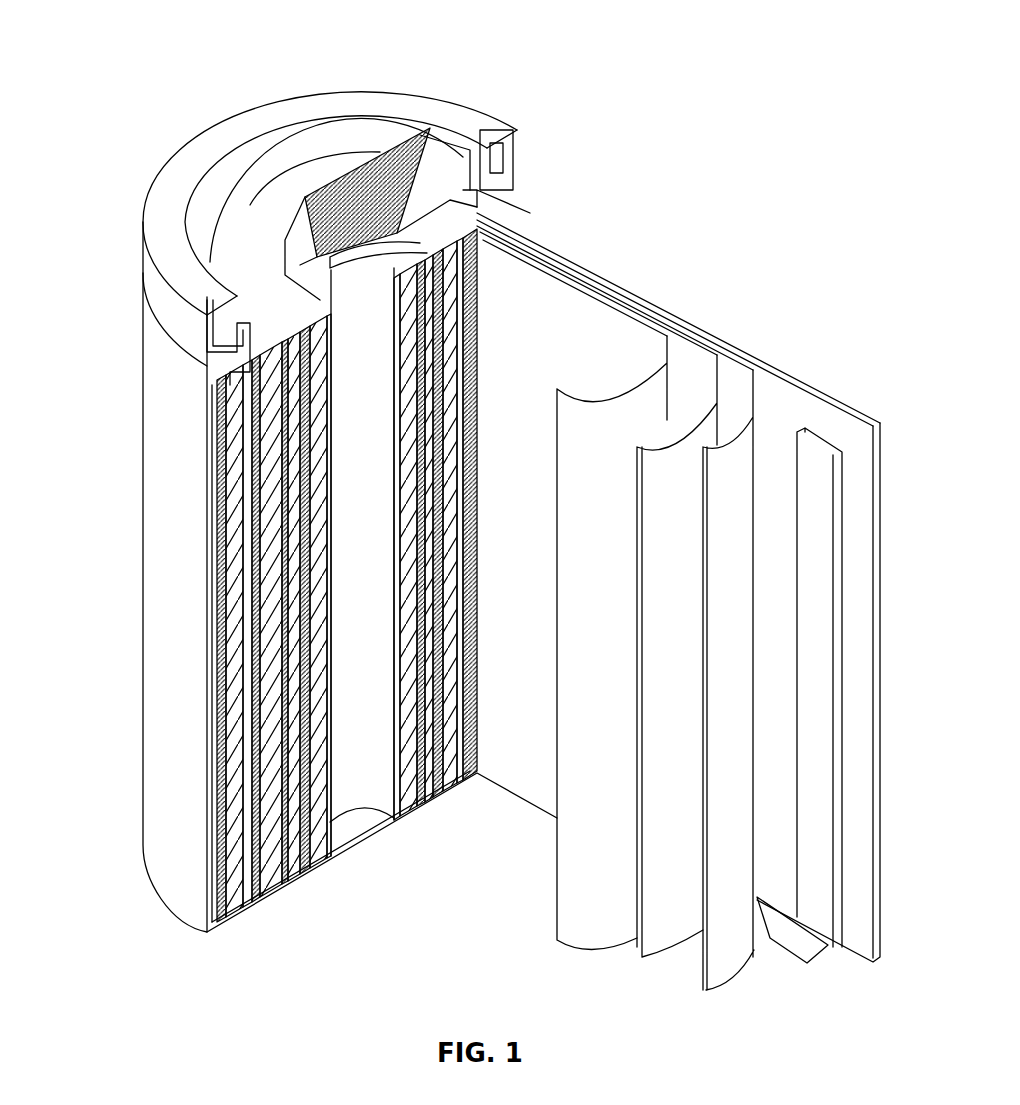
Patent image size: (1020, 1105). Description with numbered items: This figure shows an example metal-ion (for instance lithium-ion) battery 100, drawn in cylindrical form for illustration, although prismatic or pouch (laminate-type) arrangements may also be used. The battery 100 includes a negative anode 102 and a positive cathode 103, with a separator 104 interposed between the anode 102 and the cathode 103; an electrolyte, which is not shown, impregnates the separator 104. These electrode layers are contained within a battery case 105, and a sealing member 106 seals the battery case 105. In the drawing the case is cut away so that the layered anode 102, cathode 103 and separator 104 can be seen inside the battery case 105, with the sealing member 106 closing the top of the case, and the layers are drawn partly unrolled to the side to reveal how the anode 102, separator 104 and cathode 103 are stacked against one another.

The battery 100 is at (471, 500).
The negative anode 102 is at (832, 395).
The positive cathode 103 is at (697, 380).
The separator 104 is at (657, 338).
The battery case 105 is at (155, 583).
The sealing member 106 is at (336, 122).